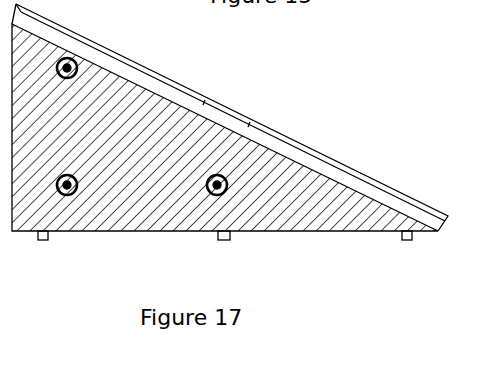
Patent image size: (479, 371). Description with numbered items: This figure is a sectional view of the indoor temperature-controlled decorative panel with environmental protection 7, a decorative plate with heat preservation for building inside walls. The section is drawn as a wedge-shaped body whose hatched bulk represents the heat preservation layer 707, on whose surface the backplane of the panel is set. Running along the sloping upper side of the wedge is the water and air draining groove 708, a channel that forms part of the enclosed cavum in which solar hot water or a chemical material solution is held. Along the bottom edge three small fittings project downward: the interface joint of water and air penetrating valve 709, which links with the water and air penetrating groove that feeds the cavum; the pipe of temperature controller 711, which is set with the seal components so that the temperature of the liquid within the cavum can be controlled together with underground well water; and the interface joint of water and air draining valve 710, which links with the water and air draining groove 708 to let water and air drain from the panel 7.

The temperature-controlled decorative panel with environmental protection 7 is at (386, 52).
The heat preservation layer 707 is at (123, 75).
The water and air draining groove 708 is at (287, 140).
The interface joint of water and air penetrating valve 709 is at (43, 240).
The interface joint of water and air draining valve 710 is at (407, 240).
The pipe of temperature controller 711 is at (224, 240).